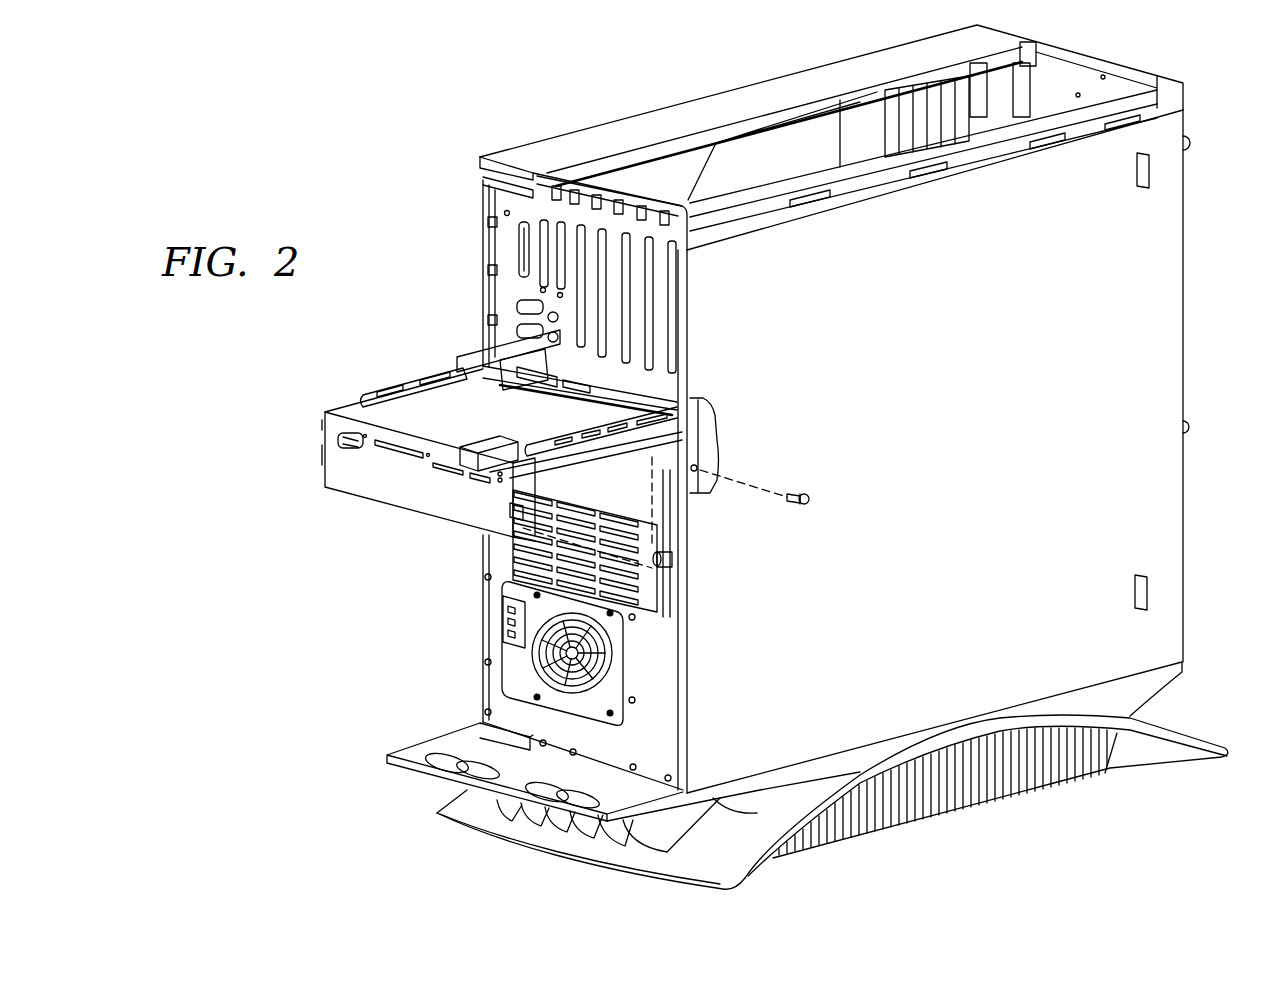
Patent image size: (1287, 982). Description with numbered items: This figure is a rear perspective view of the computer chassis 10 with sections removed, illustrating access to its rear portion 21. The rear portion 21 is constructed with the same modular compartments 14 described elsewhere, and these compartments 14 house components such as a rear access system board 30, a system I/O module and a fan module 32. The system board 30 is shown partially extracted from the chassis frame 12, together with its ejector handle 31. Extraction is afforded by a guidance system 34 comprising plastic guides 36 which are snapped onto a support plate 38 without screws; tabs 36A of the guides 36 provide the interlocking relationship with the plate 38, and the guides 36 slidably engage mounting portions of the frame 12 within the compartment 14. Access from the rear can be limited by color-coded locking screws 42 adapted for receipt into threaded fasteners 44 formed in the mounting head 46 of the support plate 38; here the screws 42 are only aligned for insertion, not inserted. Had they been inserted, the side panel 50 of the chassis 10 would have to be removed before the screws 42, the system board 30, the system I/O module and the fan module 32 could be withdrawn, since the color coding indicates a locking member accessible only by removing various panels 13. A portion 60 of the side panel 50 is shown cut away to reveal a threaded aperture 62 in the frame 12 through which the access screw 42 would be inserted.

The computer chassis 10 is at (1221, 109).
The chassis frame 12 is at (1027, 60).
The panels 13 is at (1185, 319).
The compartments 14 is at (462, 306).
The rear portion 21 is at (464, 172).
The system board 30 is at (408, 410).
The ejector handle 31 is at (462, 366).
The fan module 32 is at (520, 681).
The guidance system 34 is at (637, 436).
The guides 36 is at (603, 427).
The tabs 36A is at (540, 444).
The support plate 38 is at (461, 430).
The locking screws 42 is at (805, 502).
The threaded fasteners 44 is at (512, 515).
The mounting head 46 is at (382, 496).
The side panel 50 is at (960, 442).
The cut-away portion 60 is at (728, 414).
The threaded aperture 62 is at (699, 471).